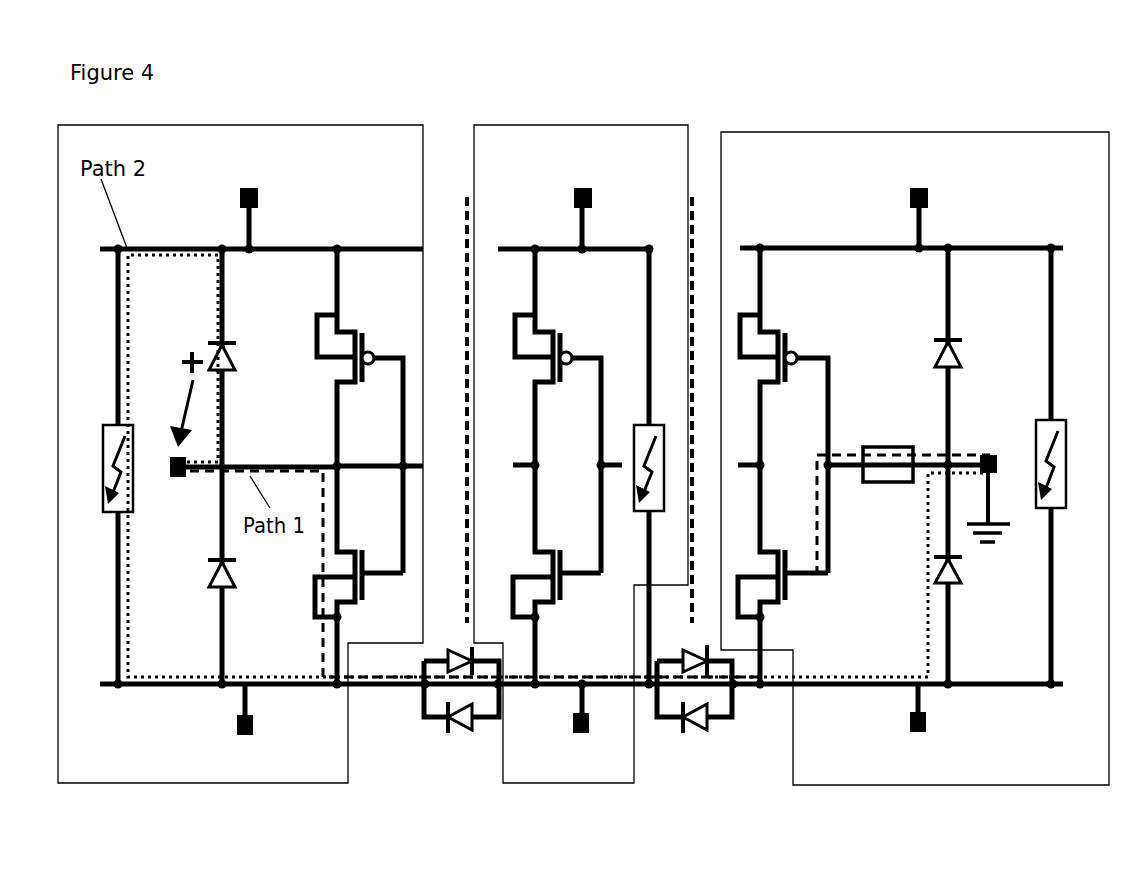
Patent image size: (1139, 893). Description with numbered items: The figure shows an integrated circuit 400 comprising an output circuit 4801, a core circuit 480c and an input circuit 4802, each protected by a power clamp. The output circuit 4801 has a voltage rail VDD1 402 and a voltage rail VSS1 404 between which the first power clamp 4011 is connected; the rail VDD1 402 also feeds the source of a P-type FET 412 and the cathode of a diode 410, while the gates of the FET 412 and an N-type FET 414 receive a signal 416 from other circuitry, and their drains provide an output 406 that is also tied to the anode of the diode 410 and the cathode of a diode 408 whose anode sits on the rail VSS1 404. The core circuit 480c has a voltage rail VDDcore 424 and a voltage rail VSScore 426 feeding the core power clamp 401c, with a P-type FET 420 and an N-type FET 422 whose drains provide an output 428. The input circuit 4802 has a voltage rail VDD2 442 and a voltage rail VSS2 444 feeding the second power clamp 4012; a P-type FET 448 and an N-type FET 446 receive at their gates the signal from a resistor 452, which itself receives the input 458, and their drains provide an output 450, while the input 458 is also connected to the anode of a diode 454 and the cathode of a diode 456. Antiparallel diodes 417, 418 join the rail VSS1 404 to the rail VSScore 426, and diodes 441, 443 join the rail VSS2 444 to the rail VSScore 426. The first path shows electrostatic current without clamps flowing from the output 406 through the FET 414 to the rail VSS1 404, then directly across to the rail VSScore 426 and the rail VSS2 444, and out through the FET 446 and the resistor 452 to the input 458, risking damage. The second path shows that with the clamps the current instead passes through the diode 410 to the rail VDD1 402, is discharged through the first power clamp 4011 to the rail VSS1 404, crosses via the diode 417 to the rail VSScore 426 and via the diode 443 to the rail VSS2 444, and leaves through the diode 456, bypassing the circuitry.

The integrated circuit 400 is at (960, 100).
The power clamp 1 4011 is at (115, 418).
The core power clamp 401c is at (640, 422).
The power clamp 2 4012 is at (1040, 418).
The voltage rail VDD1 402 is at (241, 239).
The voltage rail VSS1 404 is at (236, 724).
The output 406 is at (177, 455).
The diode 408 is at (228, 590).
The diode 410 is at (203, 337).
The P-type FET 412 is at (352, 388).
The FET 414 is at (363, 590).
The signal 416 is at (396, 467).
The diode 417 is at (457, 646).
The diode 418 is at (458, 734).
The P-type FET 420 is at (559, 325).
The N-type FET 422 is at (562, 547).
The voltage rail VDDcore 424 is at (588, 240).
The voltage rail VSScore 426 is at (578, 674).
The output 428 is at (522, 456).
The diode 441 is at (695, 735).
The voltage rail VDD2 442 is at (924, 242).
The diode 443 is at (696, 676).
The voltage rail VSS2 444 is at (921, 693).
The N-type FET 446 is at (773, 602).
The P-type FET 448 is at (786, 323).
The output 450 is at (745, 455).
The resistor 452 is at (880, 444).
The diode 454 is at (930, 337).
The diode 456 is at (930, 571).
The input 458 is at (993, 478).
The output circuit 4801 is at (295, 123).
The core circuit 480c is at (612, 123).
The input circuit 4802 is at (857, 130).